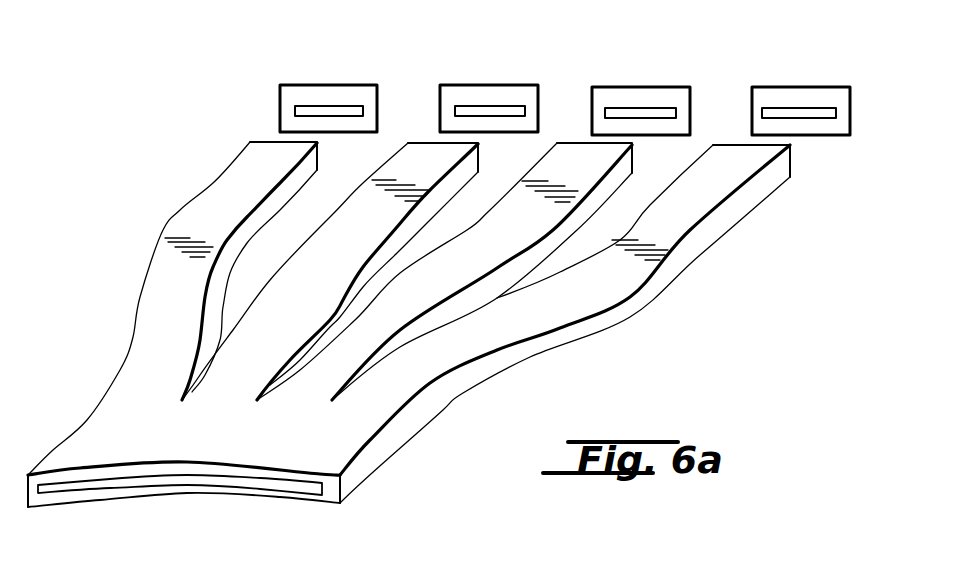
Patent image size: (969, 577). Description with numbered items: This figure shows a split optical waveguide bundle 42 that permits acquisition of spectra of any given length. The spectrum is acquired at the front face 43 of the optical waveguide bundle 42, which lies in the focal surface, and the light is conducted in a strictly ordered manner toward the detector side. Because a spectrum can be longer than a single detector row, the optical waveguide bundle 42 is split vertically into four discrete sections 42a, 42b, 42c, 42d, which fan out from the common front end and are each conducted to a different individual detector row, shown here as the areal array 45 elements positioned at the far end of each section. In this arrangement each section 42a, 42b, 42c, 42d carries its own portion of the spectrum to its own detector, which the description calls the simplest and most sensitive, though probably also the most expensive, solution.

The optical waveguide bundle 42 is at (343, 442).
The discrete section 42a is at (750, 168).
The discrete section 42b is at (578, 152).
The discrete section 42c is at (418, 152).
The discrete section 42d is at (248, 172).
The front face 43 is at (293, 487).
The areal array 45 is at (328, 97).